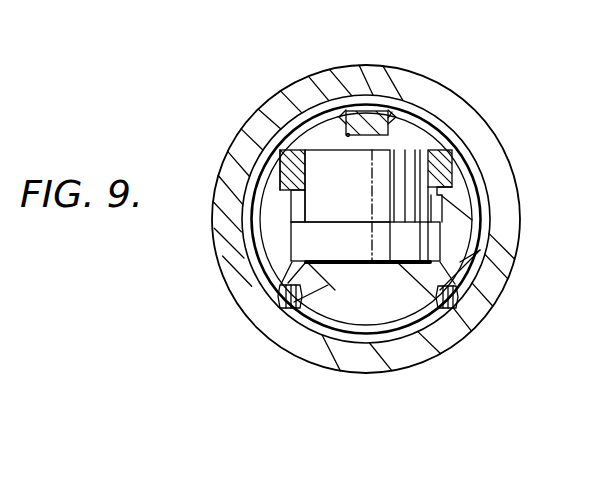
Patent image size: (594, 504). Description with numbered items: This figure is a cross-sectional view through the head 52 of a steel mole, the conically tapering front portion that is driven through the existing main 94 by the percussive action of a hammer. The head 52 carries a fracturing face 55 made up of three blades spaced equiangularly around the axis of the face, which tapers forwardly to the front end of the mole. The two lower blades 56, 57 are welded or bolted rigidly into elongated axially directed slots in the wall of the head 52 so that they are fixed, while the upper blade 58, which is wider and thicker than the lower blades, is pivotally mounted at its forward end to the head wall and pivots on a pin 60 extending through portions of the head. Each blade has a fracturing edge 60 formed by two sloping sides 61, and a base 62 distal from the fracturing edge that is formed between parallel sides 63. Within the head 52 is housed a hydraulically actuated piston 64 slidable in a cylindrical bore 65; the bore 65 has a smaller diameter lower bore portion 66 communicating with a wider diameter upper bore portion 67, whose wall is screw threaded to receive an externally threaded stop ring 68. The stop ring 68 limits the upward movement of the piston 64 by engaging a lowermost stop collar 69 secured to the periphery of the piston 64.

The head 52 is at (444, 197).
The fracturing face 55 is at (448, 130).
The lower blade 56 is at (282, 307).
The lower blade 57 is at (459, 298).
The upper blade 58 is at (392, 112).
The pin 60 is at (378, 110).
The sloping sides 61 is at (344, 100).
The base 62 is at (400, 260).
The parallel sides 63 is at (318, 103).
The piston 64 is at (455, 200).
The cylindrical bore 65 is at (291, 207).
The lower bore portion 66 is at (480, 250).
The upper bore portion 67 is at (280, 175).
The stop ring 68 is at (290, 142).
The stop collar 69 is at (400, 228).
The existing main 94 is at (498, 162).